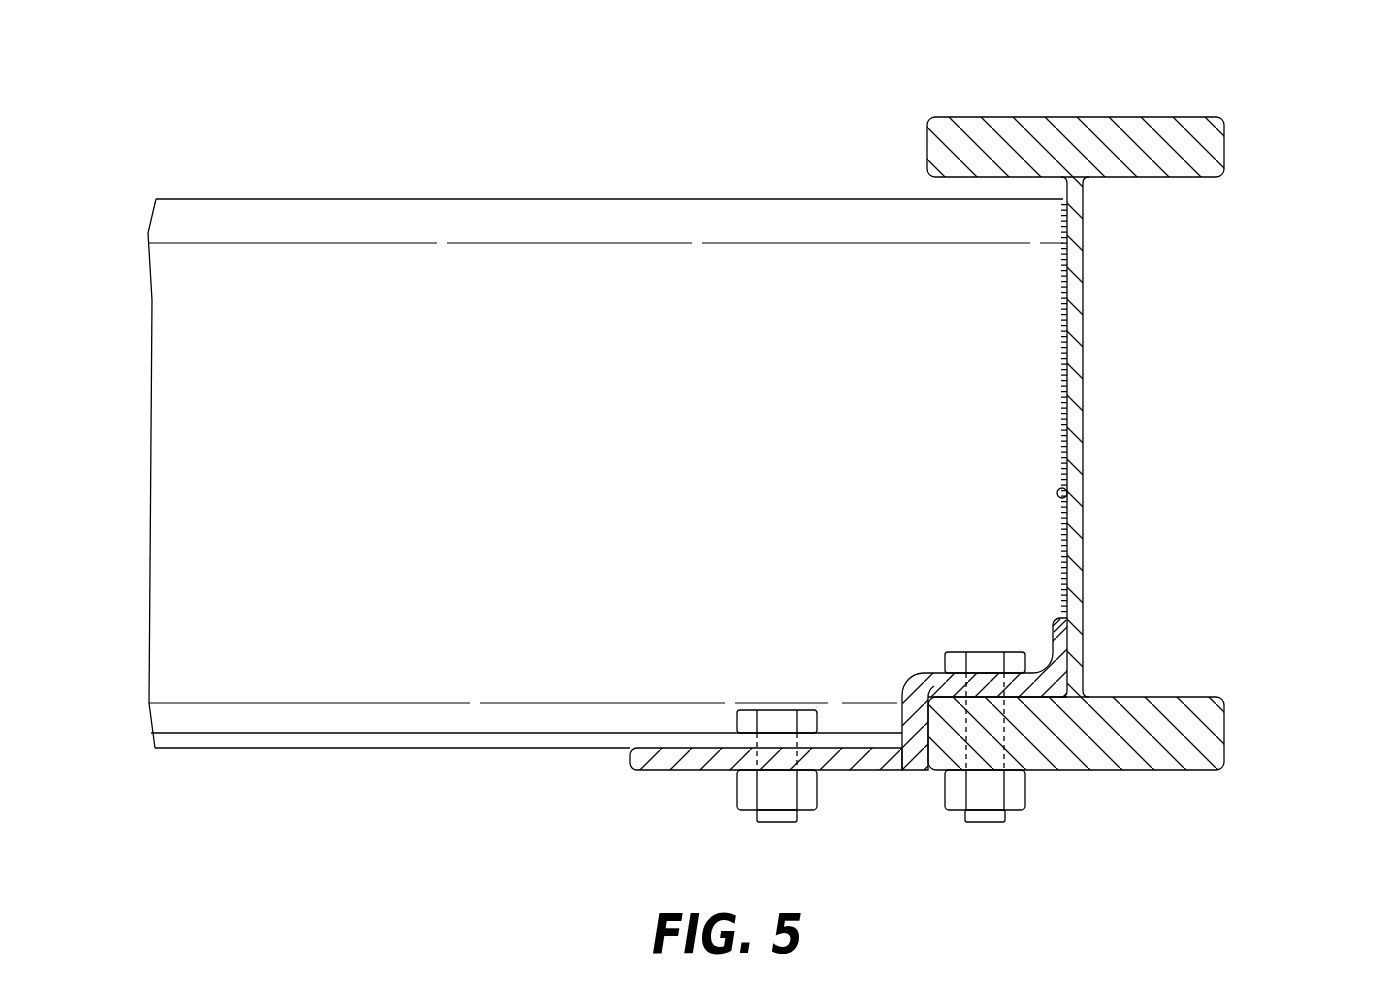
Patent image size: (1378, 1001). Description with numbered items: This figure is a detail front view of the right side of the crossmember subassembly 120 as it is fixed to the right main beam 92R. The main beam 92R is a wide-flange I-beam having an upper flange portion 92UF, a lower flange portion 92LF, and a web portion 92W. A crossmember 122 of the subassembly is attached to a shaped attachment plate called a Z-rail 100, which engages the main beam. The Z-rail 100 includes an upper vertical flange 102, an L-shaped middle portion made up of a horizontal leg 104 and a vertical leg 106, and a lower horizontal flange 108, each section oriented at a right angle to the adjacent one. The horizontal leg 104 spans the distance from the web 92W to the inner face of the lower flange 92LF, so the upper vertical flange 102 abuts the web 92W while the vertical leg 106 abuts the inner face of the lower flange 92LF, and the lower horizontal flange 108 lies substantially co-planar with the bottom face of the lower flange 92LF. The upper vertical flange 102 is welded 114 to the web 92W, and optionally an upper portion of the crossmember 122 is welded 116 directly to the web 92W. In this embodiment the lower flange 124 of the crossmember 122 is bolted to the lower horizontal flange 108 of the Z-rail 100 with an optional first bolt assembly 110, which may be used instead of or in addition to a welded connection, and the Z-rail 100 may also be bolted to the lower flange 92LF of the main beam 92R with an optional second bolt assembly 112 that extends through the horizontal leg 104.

The right main beam 92R is at (1141, 402).
The upper flange portion 92UF is at (1222, 136).
The web portion 92W is at (1084, 338).
The lower flange portion 92LF is at (1223, 731).
The Z-rail 100 is at (885, 711).
The upper vertical flange 102 is at (1021, 710).
The horizontal leg 104 is at (1025, 688).
The vertical leg 106 is at (911, 738).
The lower horizontal flange 108 is at (701, 762).
The first bolt assembly 110 is at (781, 704).
The second bolt assembly 112 is at (991, 644).
The weld 114 is at (1063, 622).
The weld 116 is at (1070, 490).
The crossmember subassembly 120 is at (605, 467).
The crossmember 122 is at (617, 478).
The lower flange 124 is at (360, 740).